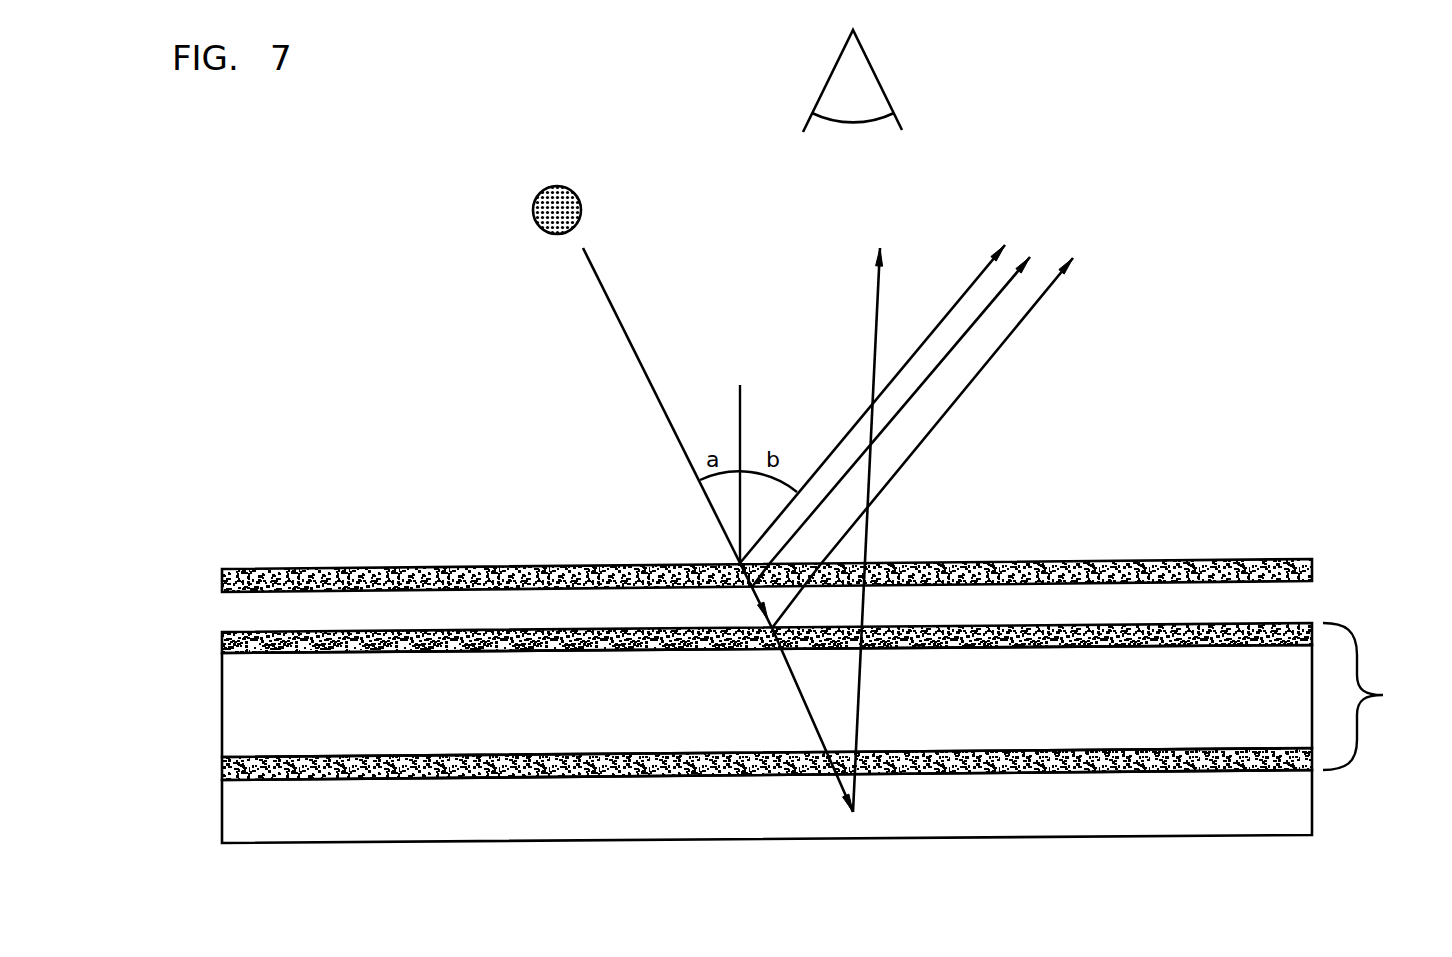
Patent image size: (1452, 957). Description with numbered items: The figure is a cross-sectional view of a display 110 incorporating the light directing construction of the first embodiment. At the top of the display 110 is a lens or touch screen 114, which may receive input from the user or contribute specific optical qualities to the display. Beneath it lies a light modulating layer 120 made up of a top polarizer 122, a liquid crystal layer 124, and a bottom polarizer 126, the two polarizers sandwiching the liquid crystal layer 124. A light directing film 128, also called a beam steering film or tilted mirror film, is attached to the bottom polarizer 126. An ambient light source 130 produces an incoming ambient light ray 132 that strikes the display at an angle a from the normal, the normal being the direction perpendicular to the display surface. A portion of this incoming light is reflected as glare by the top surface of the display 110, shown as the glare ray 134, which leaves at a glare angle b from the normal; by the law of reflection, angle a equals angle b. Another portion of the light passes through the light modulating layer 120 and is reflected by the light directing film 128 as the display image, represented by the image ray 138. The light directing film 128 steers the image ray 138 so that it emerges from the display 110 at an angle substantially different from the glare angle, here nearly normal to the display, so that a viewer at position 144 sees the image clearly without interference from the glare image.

The display 110 is at (1200, 510).
The lens or touch screen 114 is at (222, 576).
The light modulating layer 120 is at (1383, 695).
The top polarizer 122 is at (223, 642).
The liquid crystal layer 124 is at (227, 713).
The bottom polarizer 126 is at (227, 770).
The light directing film 128 is at (227, 820).
The ambient light source 130 is at (577, 190).
The ambient light ray 132 is at (627, 335).
The glare ray 134 is at (965, 292).
The image ray 138 is at (875, 332).
The viewer position 144 is at (880, 80).